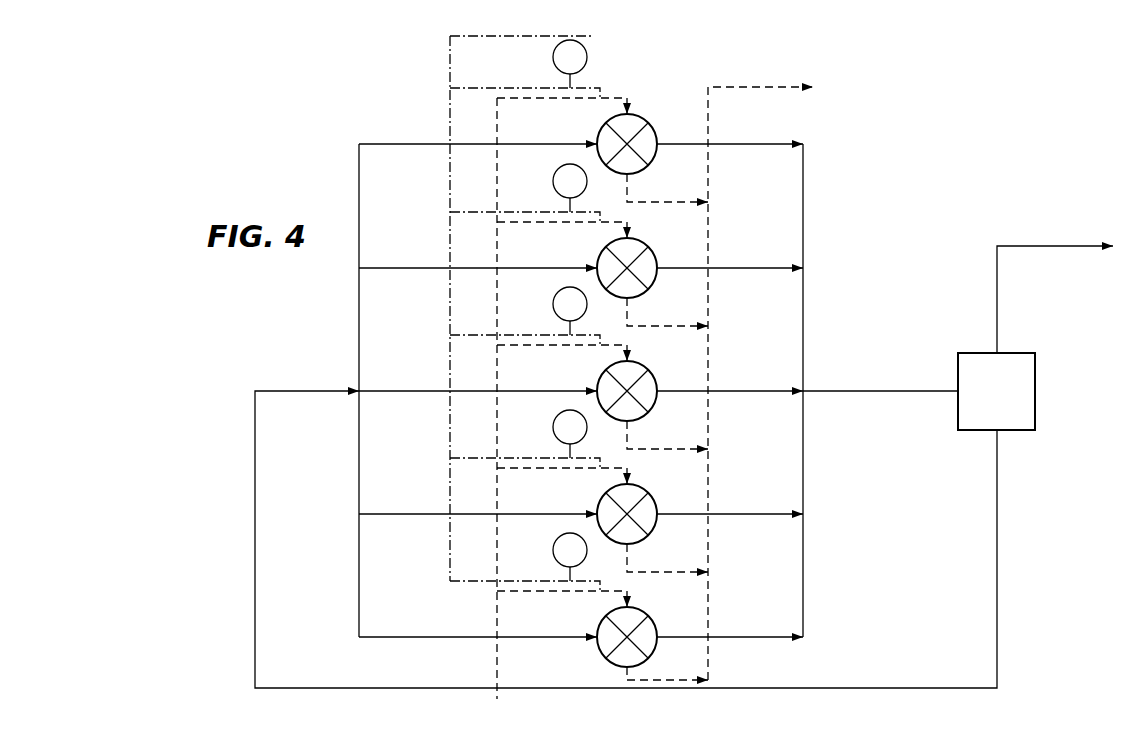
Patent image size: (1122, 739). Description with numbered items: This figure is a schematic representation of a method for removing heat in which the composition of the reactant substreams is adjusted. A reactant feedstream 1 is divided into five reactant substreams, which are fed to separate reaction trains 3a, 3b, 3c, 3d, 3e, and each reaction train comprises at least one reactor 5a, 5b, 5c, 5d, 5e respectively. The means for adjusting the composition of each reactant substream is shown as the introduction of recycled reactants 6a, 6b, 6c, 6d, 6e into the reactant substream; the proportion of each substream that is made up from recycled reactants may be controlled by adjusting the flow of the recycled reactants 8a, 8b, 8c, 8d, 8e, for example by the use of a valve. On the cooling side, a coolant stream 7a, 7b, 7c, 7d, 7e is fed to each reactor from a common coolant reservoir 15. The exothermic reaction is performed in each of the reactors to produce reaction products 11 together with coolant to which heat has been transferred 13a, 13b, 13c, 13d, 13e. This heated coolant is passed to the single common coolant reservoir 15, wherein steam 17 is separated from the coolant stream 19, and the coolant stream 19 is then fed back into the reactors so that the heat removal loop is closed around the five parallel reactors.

The reactant feedstream 1 is at (497, 660).
The reaction train 3a is at (530, 98).
The reaction train 3b is at (530, 222).
The reaction train 3c is at (530, 345).
The reaction train 3d is at (530, 468).
The reaction train 3e is at (530, 591).
The reactor 5a is at (645, 122).
The reactor 5b is at (650, 250).
The reactor 5c is at (650, 373).
The reactor 5d is at (650, 496).
The reactor 5e is at (650, 619).
The recycled reactants 6a is at (470, 88).
The recycled reactants 6b is at (470, 212).
The recycled reactants 6c is at (470, 335).
The recycled reactants 6d is at (470, 458).
The recycled reactants 6e is at (470, 581).
The coolant stream 7a is at (400, 144).
The coolant stream 7b is at (400, 268).
The coolant stream 7c is at (400, 391).
The coolant stream 7d is at (400, 514).
The coolant stream 7e is at (400, 637).
The flow adjustment of recycled reactants 8a is at (570, 64).
The flow adjustment of recycled reactants 8b is at (570, 188).
The flow adjustment of recycled reactants 8c is at (570, 311).
The flow adjustment of recycled reactants 8d is at (570, 434).
The flow adjustment of recycled reactants 8e is at (570, 557).
The reaction products 11 is at (766, 87).
The coolant to which heat has been transferred 13a is at (768, 144).
The coolant to which heat has been transferred 13b is at (768, 268).
The coolant to which heat has been transferred 13c is at (768, 391).
The coolant to which heat has been transferred 13d is at (768, 514).
The coolant to which heat has been transferred 13e is at (768, 637).
The common coolant reservoir 15 is at (1035, 392).
The steam 17 is at (1058, 246).
The coolant stream 19 is at (997, 625).